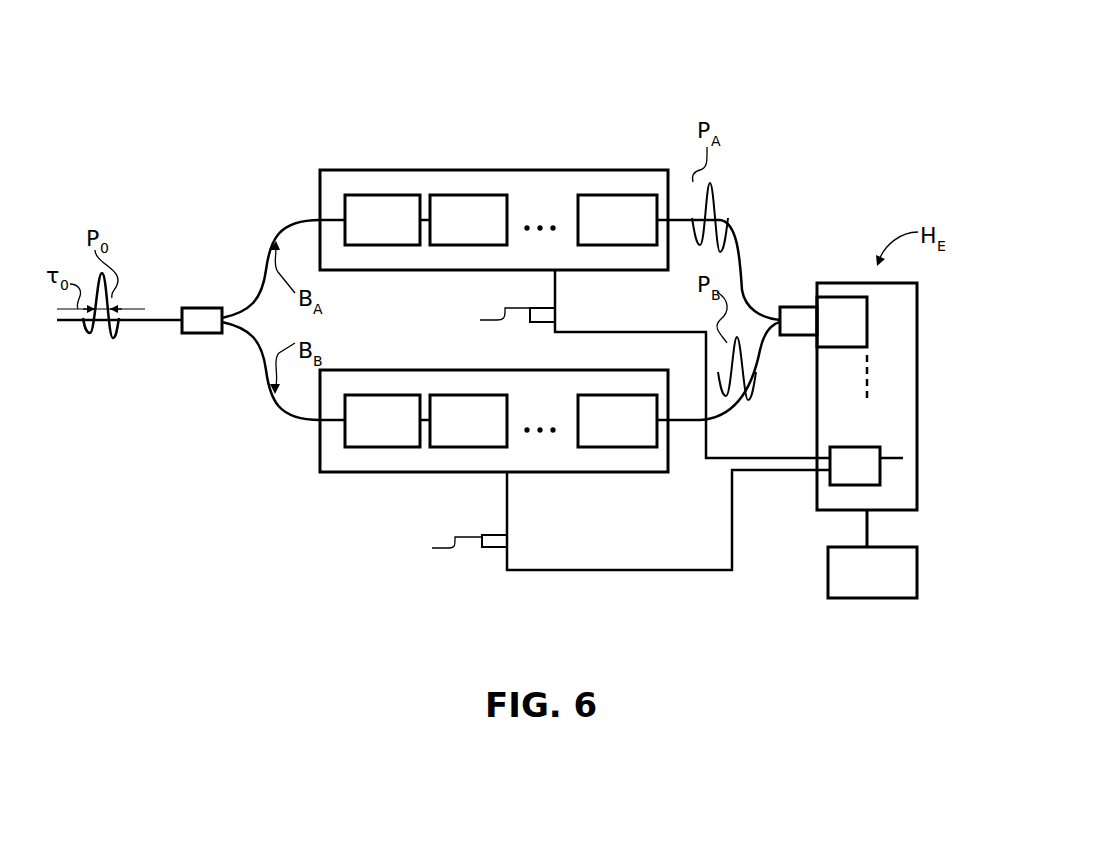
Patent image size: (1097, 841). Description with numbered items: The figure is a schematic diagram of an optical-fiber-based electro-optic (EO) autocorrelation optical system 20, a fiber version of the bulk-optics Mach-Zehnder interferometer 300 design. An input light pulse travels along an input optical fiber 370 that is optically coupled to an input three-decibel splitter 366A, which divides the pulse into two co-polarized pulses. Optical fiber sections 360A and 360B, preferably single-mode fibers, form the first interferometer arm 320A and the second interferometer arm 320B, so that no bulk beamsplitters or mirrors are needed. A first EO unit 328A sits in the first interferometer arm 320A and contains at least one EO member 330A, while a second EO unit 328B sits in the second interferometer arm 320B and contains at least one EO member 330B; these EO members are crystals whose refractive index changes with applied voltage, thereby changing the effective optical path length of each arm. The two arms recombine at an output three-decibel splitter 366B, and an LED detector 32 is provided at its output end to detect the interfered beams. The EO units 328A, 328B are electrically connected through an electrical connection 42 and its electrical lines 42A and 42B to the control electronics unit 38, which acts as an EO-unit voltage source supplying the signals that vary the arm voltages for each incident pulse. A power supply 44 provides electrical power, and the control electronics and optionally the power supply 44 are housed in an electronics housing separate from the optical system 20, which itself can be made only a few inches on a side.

The EO autocorrelation optical system 20 is at (644, 72).
The LED detector 32 is at (842, 322).
The control electronics unit 38 is at (855, 466).
The electrical connection 42 is at (758, 450).
The electrical line 42A is at (646, 332).
The electrical line 42B is at (513, 573).
The power supply 44 is at (872, 554).
The Mach-Zehnder interferometer 300 is at (313, 543).
The first interferometer arm 320A is at (404, 126).
The second interferometer arm 320B is at (560, 503).
The first EO unit 328A is at (530, 170).
The second EO unit 328B is at (355, 472).
The EO member 330A is at (501, 220).
The EO member 330B is at (501, 421).
The optical fiber section 360A is at (268, 230).
The optical fiber section 360B is at (268, 412).
The 3-dB splitter 366A is at (196, 306).
The 3-dB splitter 366B is at (793, 306).
The input optical fiber 370 is at (141, 322).